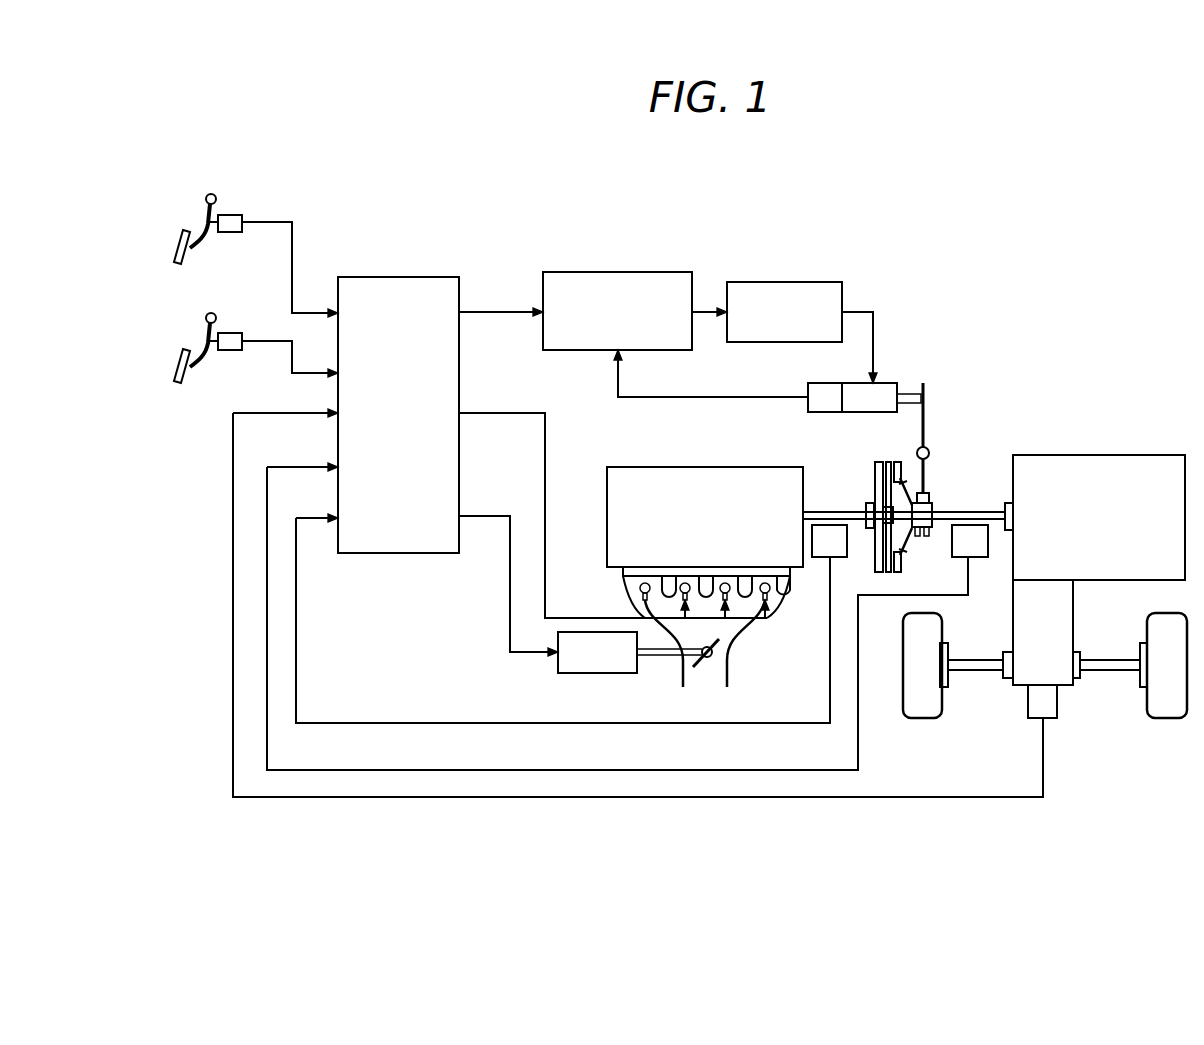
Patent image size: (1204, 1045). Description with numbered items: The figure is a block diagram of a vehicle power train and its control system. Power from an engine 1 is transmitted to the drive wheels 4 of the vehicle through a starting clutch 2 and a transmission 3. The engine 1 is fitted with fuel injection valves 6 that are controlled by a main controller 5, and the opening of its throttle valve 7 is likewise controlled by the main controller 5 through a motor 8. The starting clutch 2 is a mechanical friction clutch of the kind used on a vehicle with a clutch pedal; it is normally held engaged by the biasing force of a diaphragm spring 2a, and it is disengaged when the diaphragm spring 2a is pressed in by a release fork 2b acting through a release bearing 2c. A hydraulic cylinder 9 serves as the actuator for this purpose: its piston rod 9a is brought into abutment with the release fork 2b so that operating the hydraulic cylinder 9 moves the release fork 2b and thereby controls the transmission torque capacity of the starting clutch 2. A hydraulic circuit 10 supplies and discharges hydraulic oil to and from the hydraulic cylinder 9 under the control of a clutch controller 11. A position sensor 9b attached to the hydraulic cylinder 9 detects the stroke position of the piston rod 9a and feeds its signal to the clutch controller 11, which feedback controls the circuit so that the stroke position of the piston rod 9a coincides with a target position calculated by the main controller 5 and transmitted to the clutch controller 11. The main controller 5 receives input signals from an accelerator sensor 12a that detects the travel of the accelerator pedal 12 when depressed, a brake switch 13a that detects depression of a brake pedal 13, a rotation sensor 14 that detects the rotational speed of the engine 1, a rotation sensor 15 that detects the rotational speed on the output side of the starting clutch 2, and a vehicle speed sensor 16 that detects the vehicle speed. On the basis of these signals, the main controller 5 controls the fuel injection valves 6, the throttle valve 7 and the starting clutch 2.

The engine 1 is at (705, 467).
The starting clutch 2 is at (904, 484).
The diaphragm spring 2a is at (905, 545).
The release fork 2b is at (925, 420).
The release bearing 2c is at (932, 505).
The transmission 3 is at (1086, 455).
The drive wheels 4 is at (925, 718).
The main controller 5 is at (421, 277).
The fuel injection valves 6 is at (648, 590).
The throttle valve 7 is at (722, 655).
The motor 8 is at (598, 673).
The hydraulic cylinder 9 is at (861, 356).
The piston rod 9a is at (903, 393).
The position sensor 9b is at (818, 385).
The hydraulic circuit 10 is at (790, 282).
The clutch controller 11 is at (632, 272).
The accelerator pedal 12 is at (178, 250).
The accelerator sensor 12a is at (231, 214).
The brake pedal 13 is at (178, 368).
The brake switch 13a is at (231, 332).
The rotation sensor 14 is at (825, 557).
The rotation sensor 15 is at (976, 557).
The vehicle speed sensor 16 is at (1047, 718).